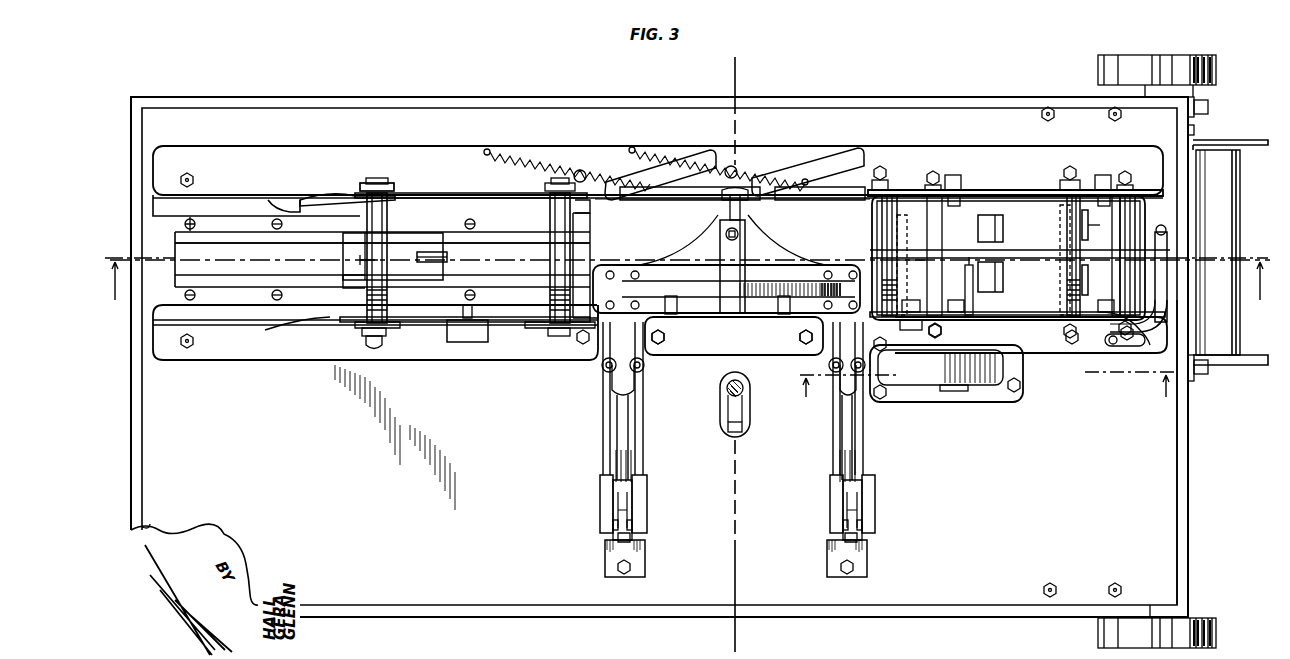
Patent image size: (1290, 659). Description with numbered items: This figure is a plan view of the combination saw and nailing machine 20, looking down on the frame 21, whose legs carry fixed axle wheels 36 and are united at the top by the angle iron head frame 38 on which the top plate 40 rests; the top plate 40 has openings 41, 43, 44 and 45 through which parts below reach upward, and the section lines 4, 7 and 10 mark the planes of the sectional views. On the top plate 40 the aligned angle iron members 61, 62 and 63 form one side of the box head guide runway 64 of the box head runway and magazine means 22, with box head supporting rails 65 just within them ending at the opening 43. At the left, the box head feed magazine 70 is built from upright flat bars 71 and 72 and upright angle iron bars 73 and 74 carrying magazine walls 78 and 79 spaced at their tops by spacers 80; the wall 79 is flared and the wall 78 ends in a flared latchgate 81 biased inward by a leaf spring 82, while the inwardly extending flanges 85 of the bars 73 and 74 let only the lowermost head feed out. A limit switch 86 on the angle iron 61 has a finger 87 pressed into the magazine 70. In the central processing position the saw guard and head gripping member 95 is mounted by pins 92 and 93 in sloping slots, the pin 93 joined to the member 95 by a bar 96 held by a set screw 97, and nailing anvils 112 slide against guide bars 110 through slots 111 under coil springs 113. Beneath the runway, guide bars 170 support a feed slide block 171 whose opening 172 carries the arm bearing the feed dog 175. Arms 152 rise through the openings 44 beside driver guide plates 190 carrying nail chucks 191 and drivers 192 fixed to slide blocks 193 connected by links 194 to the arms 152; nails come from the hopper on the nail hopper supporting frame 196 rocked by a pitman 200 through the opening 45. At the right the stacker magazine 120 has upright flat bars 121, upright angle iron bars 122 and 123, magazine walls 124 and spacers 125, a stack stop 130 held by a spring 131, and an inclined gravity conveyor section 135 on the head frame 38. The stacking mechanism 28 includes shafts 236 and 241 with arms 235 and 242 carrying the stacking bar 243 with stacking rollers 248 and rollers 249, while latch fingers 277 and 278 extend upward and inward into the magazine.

The combination saw and nailing machine 20 is at (326, 70).
The frame 21 is at (879, 92).
The box head runway and magazine means 22 is at (452, 184).
The fixed axle wheels 36 is at (1195, 65).
The head frame 38 is at (948, 618).
The top plate 40 is at (1172, 465).
The opening 41 is at (178, 267).
The opening 43 is at (1142, 195).
The openings 44 is at (630, 463).
The opening 45 is at (748, 404).
The angle iron member 61 is at (318, 352).
The angle iron member 62 is at (718, 348).
The angle iron member 63 is at (1062, 345).
The box head guide runway 64 is at (259, 223).
The box head supporting rails 65 is at (163, 212).
The box head feed magazine 70 is at (399, 183).
The upright flat bar 71 is at (398, 195).
The upright flat bar 72 is at (358, 330).
The upright angle iron bar 73 is at (552, 187).
The upright angle iron bar 74 is at (543, 328).
The magazine wall 78 is at (473, 197).
The magazine wall 79 is at (435, 323).
The spacers 80 is at (578, 243).
The flared latchgate 81 is at (275, 203).
The leaf spring 82 is at (345, 195).
The inwardly extending flanges 85 is at (592, 223).
The limit switch 86 is at (474, 342).
The finger 87 is at (462, 309).
The pins 92 is at (665, 324).
The pin 93 is at (742, 193).
The saw guard and head gripping member 95 is at (790, 280).
The bar 96 is at (729, 206).
The set screw 97 is at (740, 233).
The guide bars 110 is at (692, 158).
The slots 111 is at (712, 192).
The nailing anvils 112 is at (668, 200).
The coil springs 113 is at (538, 155).
The stacker magazine 120 is at (992, 182).
The upright flat bars 121 is at (1058, 187).
The upright angle iron bar 122 is at (898, 185).
The upright angle iron bar 123 is at (898, 330).
The magazine walls 124 is at (1010, 198).
The spacers 125 is at (889, 268).
The stack stop 130 is at (1160, 300).
The spring 131 is at (1138, 345).
The inclined gravity conveyor section 135 is at (1243, 140).
The arms 152 is at (615, 538).
The guide bars 170 is at (278, 278).
The feed slide block 171 is at (357, 280).
The opening 172 is at (360, 255).
The feed dog 175 is at (437, 253).
The driver guide plates 190 is at (635, 551).
The nail chucks 191 is at (615, 393).
The drivers 192 is at (618, 432).
The slide blocks 193 is at (640, 493).
The links 194 is at (630, 512).
The nail hopper supporting frame 196 is at (575, 330).
The pitman 200 is at (728, 408).
The arms 235 is at (915, 265).
The shaft 236 is at (935, 276).
The shaft 241 is at (1124, 296).
The arms 242 is at (1108, 265).
The stacking bar 243 is at (1042, 258).
The stacking rollers 248 is at (885, 264).
The rollers 249 is at (1008, 214).
The latch finger 277 is at (1060, 308).
The latch finger 278 is at (953, 176).
The stacking mechanism 28 is at (959, 409).
The section line 7- 7 is at (724, 71).
The section line 4- 4 is at (686, 282).
The section line 10- 10 is at (987, 397).